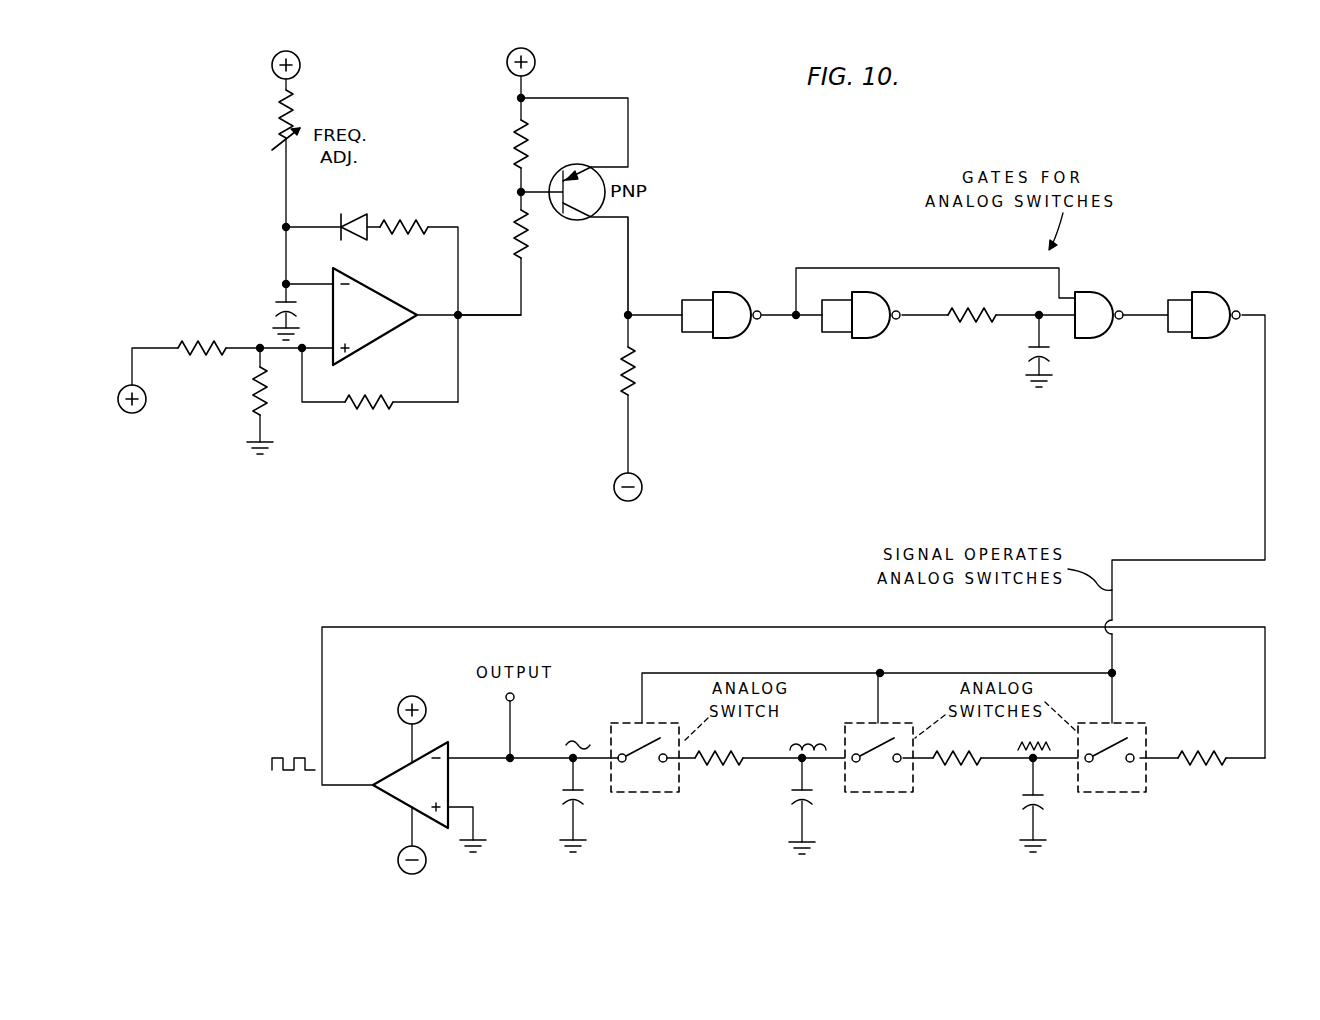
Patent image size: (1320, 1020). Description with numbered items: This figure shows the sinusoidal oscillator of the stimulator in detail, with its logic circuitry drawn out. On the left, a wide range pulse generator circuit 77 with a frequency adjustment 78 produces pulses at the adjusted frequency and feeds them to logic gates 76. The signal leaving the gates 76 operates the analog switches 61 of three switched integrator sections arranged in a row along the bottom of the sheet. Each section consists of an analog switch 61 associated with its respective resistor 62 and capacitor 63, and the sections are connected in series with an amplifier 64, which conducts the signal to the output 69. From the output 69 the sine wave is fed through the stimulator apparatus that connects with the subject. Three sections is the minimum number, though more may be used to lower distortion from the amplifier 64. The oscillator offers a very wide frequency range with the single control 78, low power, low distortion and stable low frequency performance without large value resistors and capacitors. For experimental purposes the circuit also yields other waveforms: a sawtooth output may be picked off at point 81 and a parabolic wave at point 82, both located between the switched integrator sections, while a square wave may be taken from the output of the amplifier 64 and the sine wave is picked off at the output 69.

The frequency adjustment 78 is at (270, 140).
The wide range pulse generator circuit 77 is at (405, 213).
The logic gates 76 is at (1101, 284).
The amplifier 64 is at (401, 766).
The output 69 is at (515, 698).
The capacitor 63 is at (557, 796).
The analog switch 61 is at (631, 720).
The resistor 62 is at (714, 766).
The point 82 is at (797, 763).
The point 81 is at (1028, 763).